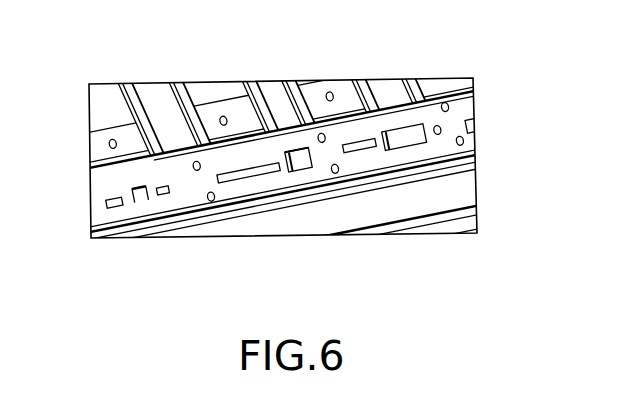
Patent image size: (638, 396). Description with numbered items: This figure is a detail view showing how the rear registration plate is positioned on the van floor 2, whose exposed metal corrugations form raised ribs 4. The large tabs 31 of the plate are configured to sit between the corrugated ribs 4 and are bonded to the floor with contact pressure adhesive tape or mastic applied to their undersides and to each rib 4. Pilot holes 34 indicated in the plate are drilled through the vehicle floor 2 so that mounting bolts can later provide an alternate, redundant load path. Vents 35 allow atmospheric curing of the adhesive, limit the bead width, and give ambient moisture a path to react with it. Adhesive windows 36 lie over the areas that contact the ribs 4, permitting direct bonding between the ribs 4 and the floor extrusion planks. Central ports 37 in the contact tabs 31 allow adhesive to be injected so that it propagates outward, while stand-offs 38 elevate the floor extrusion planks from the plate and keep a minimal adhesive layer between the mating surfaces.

The van floor 2 is at (292, 88).
The corrugated rib 4 is at (173, 140).
The large tab 31 is at (223, 118).
The pilot hole 34 is at (338, 172).
The vent 35 is at (256, 175).
The adhesive window 36 is at (307, 160).
The central port 37 is at (336, 90).
The stand-off 38 is at (112, 169).